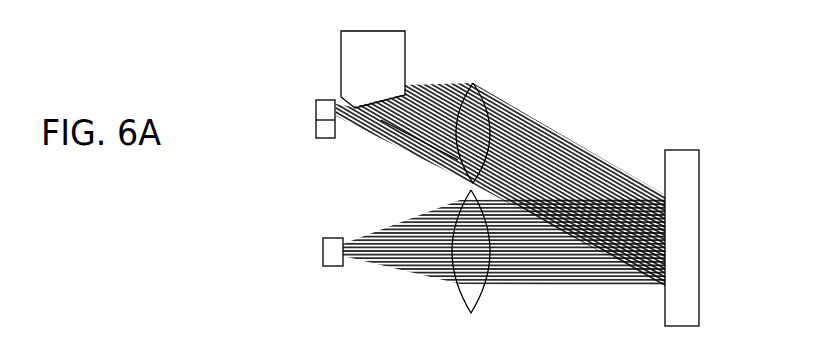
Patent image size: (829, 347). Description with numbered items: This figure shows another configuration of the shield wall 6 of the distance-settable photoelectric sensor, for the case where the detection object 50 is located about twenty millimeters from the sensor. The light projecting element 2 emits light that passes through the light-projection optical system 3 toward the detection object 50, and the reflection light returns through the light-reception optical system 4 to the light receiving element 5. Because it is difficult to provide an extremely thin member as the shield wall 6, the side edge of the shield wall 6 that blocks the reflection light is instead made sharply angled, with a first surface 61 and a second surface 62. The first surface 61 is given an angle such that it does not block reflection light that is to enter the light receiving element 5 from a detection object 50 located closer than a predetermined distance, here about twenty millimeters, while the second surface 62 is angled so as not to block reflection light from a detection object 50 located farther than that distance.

The light projecting element 2 is at (316, 232).
The light-projection optical system 3 is at (456, 296).
The light-reception optical system 4 is at (466, 78).
The light receiving element 5 is at (306, 113).
The shield wall 6 is at (398, 42).
The detection object 50 is at (692, 205).
The first surface 61 is at (340, 99).
The second surface 62 is at (373, 112).